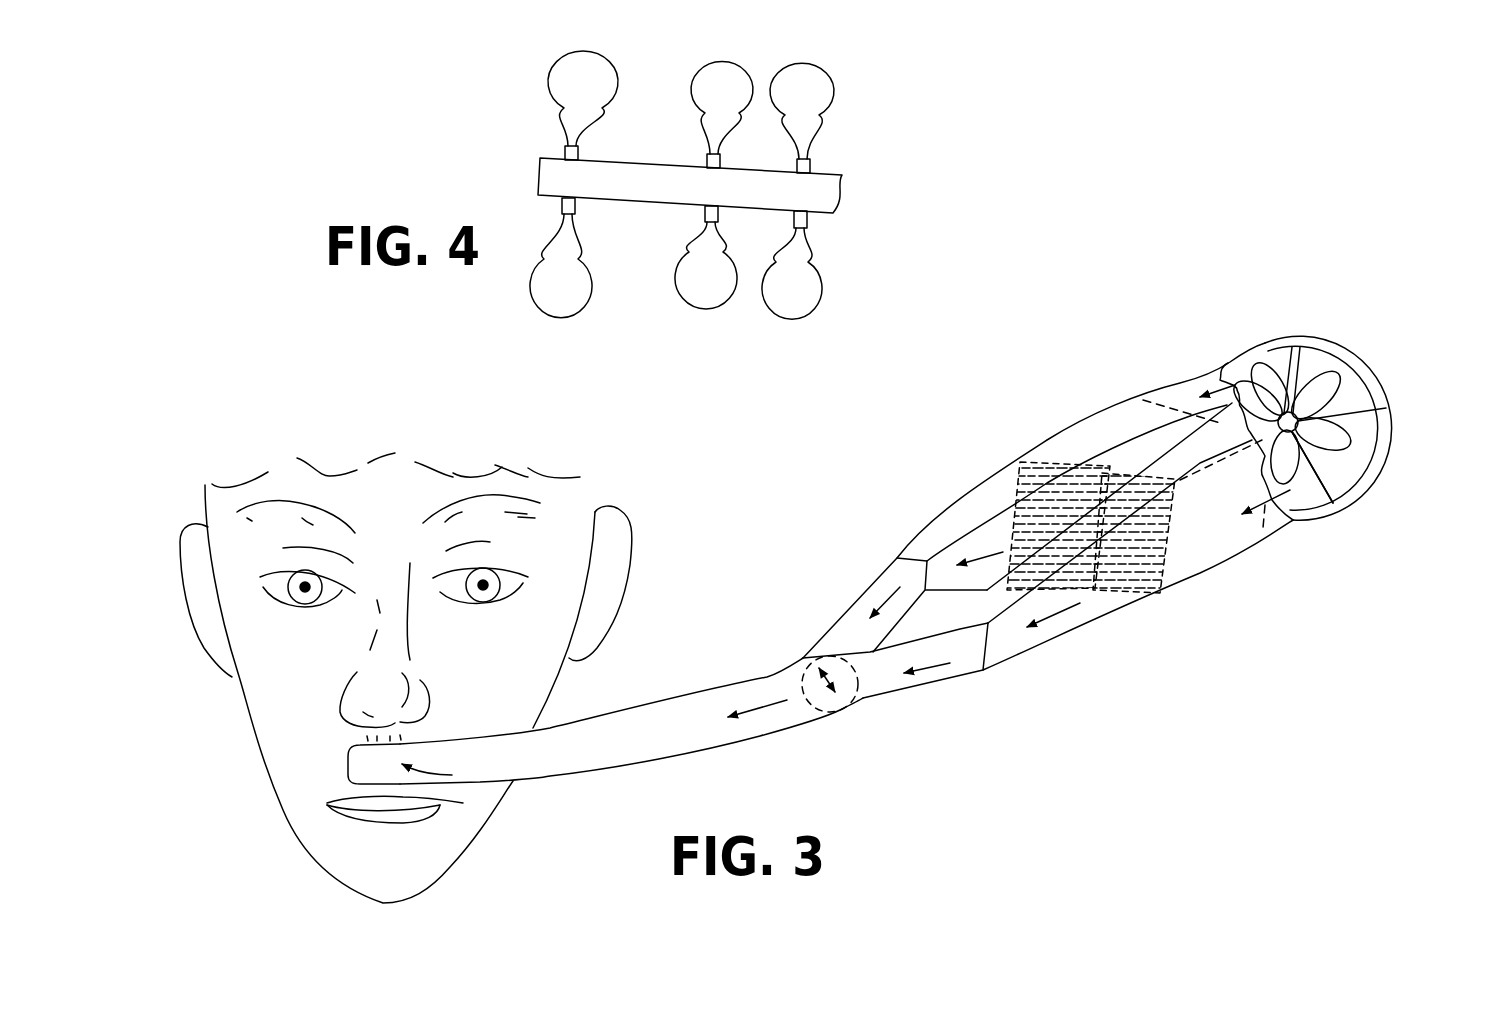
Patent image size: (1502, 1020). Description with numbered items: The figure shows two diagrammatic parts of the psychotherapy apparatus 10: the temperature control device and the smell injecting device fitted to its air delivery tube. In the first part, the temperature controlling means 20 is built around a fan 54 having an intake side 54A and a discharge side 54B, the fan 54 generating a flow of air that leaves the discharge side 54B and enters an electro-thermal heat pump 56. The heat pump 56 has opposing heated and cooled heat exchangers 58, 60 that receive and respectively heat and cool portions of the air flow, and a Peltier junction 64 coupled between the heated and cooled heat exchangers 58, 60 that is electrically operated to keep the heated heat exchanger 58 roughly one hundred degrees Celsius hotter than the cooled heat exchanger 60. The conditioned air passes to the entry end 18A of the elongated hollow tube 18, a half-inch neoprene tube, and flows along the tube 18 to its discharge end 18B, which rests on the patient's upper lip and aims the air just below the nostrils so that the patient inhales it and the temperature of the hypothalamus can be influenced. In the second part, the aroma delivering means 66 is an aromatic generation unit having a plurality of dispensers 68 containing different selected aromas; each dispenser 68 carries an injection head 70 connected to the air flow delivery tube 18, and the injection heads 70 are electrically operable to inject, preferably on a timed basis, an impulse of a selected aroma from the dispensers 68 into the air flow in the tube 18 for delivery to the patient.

In FIG. 3, the psychotherapy apparatus 10 is at (829, 505).
In FIG. 4, the hollow tube 18 is at (622, 157).
In FIG. 3, the hollow tube 18 is at (611, 713).
In FIG. 3, the entry end 18A is at (810, 723).
In FIG. 3, the discharge end 18B is at (357, 767).
In FIG. 3, the temperature controlling means 20 is at (1225, 328).
In FIG. 3, the fan 54 is at (1323, 368).
In FIG. 3, the intake side 54A is at (1387, 409).
In FIG. 3, the discharge side 54B is at (1338, 482).
In FIG. 3, the electro-thermal heat pump 56 is at (1093, 408).
In FIG. 3, the heated heat exchanger 58 is at (1057, 453).
In FIG. 3, the cooled heat exchanger 60 is at (1157, 580).
In FIG. 3, the Peltier junction 64 is at (1133, 453).
In FIG. 4, the aroma delivering means 66 is at (850, 120).
In FIG. 4, the dispenser 68 is at (600, 58).
In FIG. 4, the injection head 70 is at (562, 150).